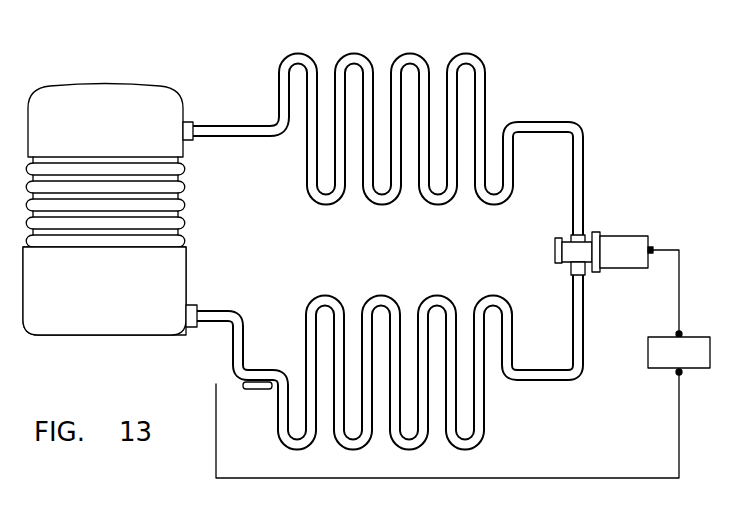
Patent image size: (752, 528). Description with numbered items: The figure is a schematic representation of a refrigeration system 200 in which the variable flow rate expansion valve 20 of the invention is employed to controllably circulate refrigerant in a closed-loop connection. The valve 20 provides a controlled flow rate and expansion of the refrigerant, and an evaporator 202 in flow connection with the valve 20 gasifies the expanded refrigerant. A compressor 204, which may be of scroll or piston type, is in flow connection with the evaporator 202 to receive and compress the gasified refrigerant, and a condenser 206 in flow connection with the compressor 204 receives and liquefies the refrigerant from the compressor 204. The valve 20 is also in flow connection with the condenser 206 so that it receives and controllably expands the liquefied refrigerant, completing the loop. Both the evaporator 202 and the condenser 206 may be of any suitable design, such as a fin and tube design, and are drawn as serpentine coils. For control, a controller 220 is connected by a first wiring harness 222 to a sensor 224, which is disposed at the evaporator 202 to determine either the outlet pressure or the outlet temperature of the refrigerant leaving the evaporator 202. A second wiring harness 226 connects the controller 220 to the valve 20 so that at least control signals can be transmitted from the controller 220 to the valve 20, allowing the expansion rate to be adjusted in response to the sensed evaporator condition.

The refrigeration system 200 is at (370, 262).
The compressor 204 is at (116, 82).
The condenser 206 is at (375, 58).
The evaporator 202 is at (488, 424).
The variable flow rate expansion valve 20 is at (618, 242).
The second wiring harness 226 is at (682, 275).
The controller 220 is at (666, 362).
The first wiring harness 222 is at (385, 480).
The sensor 224 is at (258, 392).